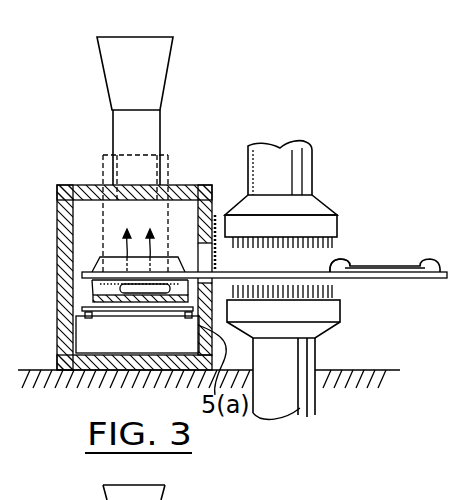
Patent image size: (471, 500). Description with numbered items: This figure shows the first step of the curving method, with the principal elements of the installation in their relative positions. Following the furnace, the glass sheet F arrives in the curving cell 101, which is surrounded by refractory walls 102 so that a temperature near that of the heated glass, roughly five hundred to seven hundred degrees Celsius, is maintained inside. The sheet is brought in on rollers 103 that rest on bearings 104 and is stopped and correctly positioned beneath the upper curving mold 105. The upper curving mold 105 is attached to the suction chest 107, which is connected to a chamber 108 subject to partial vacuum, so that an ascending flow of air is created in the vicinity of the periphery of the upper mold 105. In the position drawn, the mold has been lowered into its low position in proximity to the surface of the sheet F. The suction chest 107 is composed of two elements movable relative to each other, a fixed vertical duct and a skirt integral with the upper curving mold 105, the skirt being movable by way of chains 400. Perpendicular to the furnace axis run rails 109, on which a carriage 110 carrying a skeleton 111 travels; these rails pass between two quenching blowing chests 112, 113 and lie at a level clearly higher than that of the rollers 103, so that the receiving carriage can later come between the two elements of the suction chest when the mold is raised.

The chains 400 is at (100, 153).
The curving cell 101 is at (86, 158).
The refractory walls 102 is at (183, 184).
The rollers 103 is at (138, 310).
The bearings 104 is at (73, 320).
The upper curving mold 105 is at (113, 268).
The suction chest 107 is at (160, 265).
The chamber 108 is at (153, 73).
The rails 109 is at (363, 279).
The carriage 110 is at (408, 258).
The skeleton 111 is at (348, 265).
The quenching blowing chest 112 is at (295, 173).
The quenching blowing chest 113 is at (300, 358).
The glass sheet F is at (93, 300).